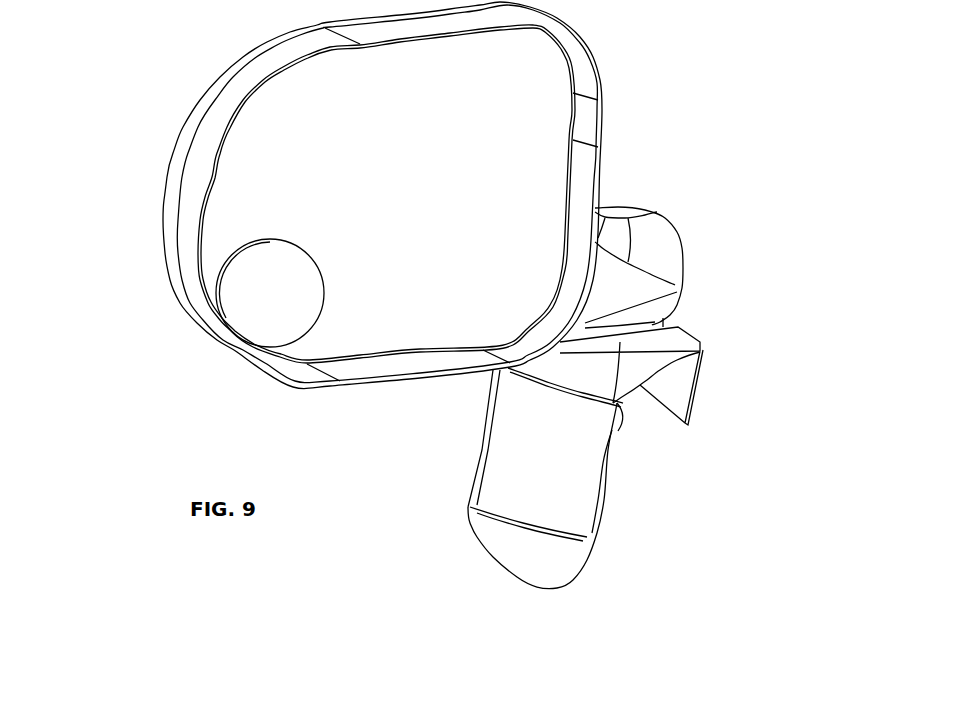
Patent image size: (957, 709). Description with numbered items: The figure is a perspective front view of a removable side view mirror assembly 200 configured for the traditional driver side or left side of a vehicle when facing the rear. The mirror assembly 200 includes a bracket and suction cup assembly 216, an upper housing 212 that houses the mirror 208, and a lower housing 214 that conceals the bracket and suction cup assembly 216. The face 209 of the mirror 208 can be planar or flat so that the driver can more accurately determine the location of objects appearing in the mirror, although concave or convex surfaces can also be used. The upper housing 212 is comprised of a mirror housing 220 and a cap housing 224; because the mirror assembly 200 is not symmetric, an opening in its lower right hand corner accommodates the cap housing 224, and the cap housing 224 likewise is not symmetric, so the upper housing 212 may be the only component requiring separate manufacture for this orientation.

The removable side view mirror assembly 200 is at (665, 157).
The mirror 208 is at (405, 305).
The face of the mirror 209 is at (507, 113).
The upper housing 212 is at (140, 285).
The lower housing 214 is at (480, 527).
The bracket and suction cup assembly 216 is at (612, 518).
The mirror housing 220 is at (172, 210).
The cap housing 224 is at (638, 260).